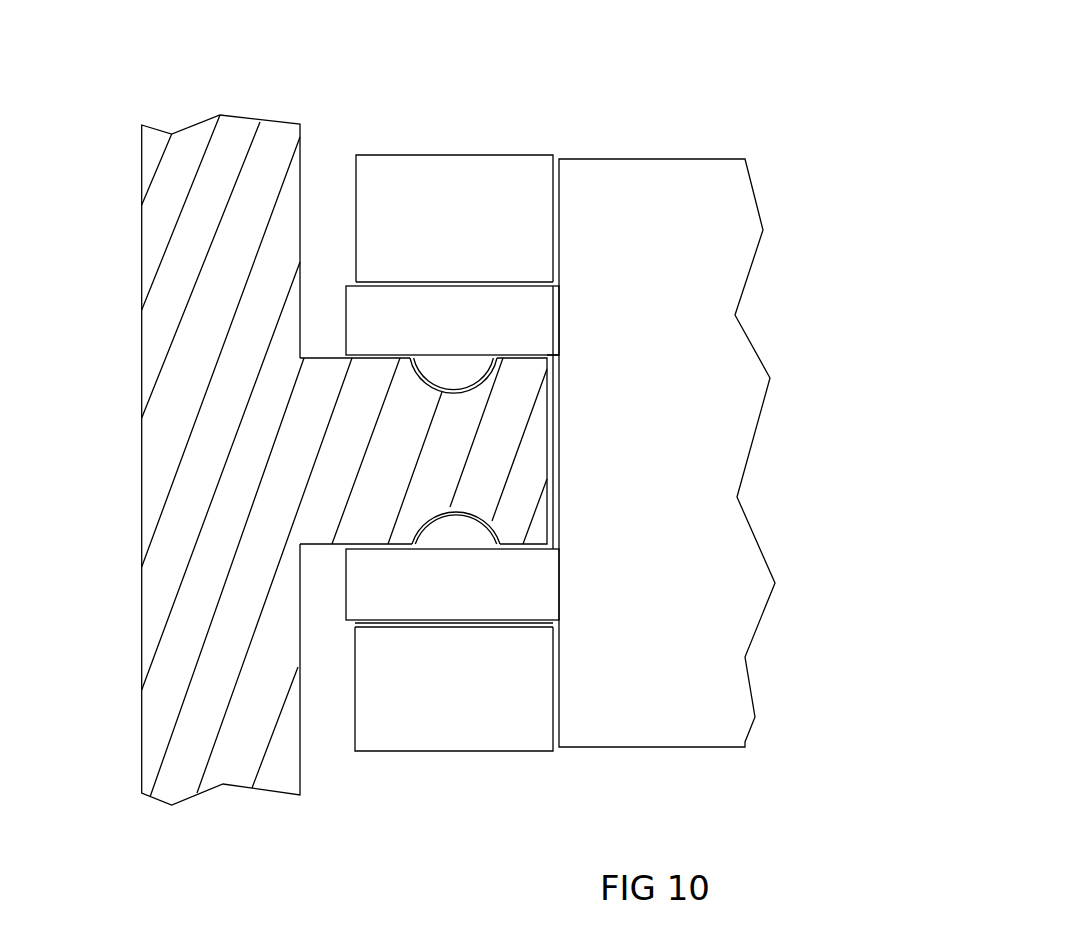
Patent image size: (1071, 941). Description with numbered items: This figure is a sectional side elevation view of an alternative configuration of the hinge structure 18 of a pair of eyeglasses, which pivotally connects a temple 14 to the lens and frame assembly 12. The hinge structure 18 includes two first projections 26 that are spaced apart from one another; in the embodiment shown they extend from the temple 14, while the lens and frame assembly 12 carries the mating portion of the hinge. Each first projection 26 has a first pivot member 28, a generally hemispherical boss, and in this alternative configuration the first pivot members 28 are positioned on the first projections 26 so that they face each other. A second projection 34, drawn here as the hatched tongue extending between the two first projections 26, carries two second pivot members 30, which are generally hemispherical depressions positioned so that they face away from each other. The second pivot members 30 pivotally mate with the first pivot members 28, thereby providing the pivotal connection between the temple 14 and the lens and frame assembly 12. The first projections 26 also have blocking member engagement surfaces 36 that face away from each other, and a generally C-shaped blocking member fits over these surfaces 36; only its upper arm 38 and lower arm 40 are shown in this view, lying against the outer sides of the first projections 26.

The lens and frame assembly 12 is at (155, 580).
The temple 14 is at (668, 708).
The first hinge structure 18 is at (310, 90).
The first projections 26 is at (428, 315).
The first pivot members 28 is at (455, 378).
The second pivot members 30 is at (437, 374).
The second projection 34 is at (532, 457).
The blocking member engagement surfaces 36 is at (450, 290).
The upper arm 38 is at (463, 188).
The lower arm 40 is at (447, 717).